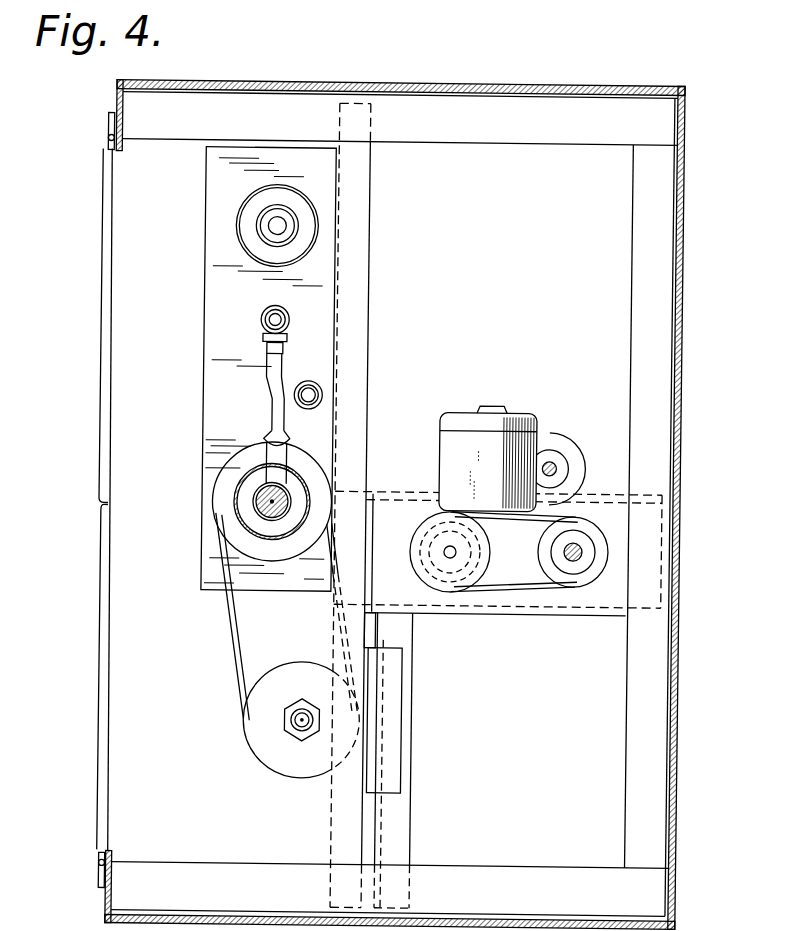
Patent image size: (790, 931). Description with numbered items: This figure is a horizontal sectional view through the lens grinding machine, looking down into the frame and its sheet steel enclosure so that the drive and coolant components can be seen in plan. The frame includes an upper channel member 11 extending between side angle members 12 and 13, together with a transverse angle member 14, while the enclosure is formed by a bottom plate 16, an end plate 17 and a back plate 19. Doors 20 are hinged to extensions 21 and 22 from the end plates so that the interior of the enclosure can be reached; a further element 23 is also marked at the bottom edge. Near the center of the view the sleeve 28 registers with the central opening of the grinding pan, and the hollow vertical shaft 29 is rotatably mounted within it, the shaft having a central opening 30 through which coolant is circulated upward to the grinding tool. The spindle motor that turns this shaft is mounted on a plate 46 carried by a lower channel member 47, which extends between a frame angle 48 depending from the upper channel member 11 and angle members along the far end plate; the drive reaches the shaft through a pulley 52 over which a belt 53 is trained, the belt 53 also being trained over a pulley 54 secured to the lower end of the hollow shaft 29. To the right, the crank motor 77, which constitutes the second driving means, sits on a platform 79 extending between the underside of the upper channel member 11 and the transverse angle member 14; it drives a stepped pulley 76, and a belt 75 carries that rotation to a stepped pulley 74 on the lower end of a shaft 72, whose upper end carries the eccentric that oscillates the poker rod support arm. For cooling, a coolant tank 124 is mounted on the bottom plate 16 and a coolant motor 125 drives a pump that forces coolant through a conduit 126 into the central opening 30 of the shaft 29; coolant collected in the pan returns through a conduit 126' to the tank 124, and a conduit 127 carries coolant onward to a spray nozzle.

The upper channel member 11 is at (361, 375).
The side angle member 12 is at (485, 134).
The side angle member 13 is at (469, 874).
The transverse angle member 14 is at (653, 324).
The bottom plate 16 is at (576, 331).
The end plate 17 is at (492, 81).
The back plate 19 is at (681, 376).
The doors 20 is at (99, 436).
The extension 21 is at (112, 101).
The extension 22 is at (110, 903).
The bottom plate 23 is at (390, 922).
The sleeve 28 is at (240, 510).
The hollow vertical shaft 29 is at (258, 499).
The central opening 30 is at (280, 501).
The plate 46 is at (378, 765).
The lower channel member 47 is at (406, 813).
The frame angle 48 is at (380, 632).
The pulley 52 is at (263, 734).
The belt 53 is at (242, 672).
The pulley 54 is at (251, 452).
The shaft 72 is at (583, 550).
The stepped pulley 74 is at (583, 526).
The belt 75 is at (526, 588).
The stepped pulley 76 is at (453, 584).
The crank motor 77 is at (504, 419).
The platform 79 is at (591, 603).
The coolant tank 124 is at (204, 295).
The coolant motor 125 is at (244, 212).
The conduit 126 is at (252, 382).
The conduit 126' is at (358, 401).
The conduit 127 is at (285, 321).